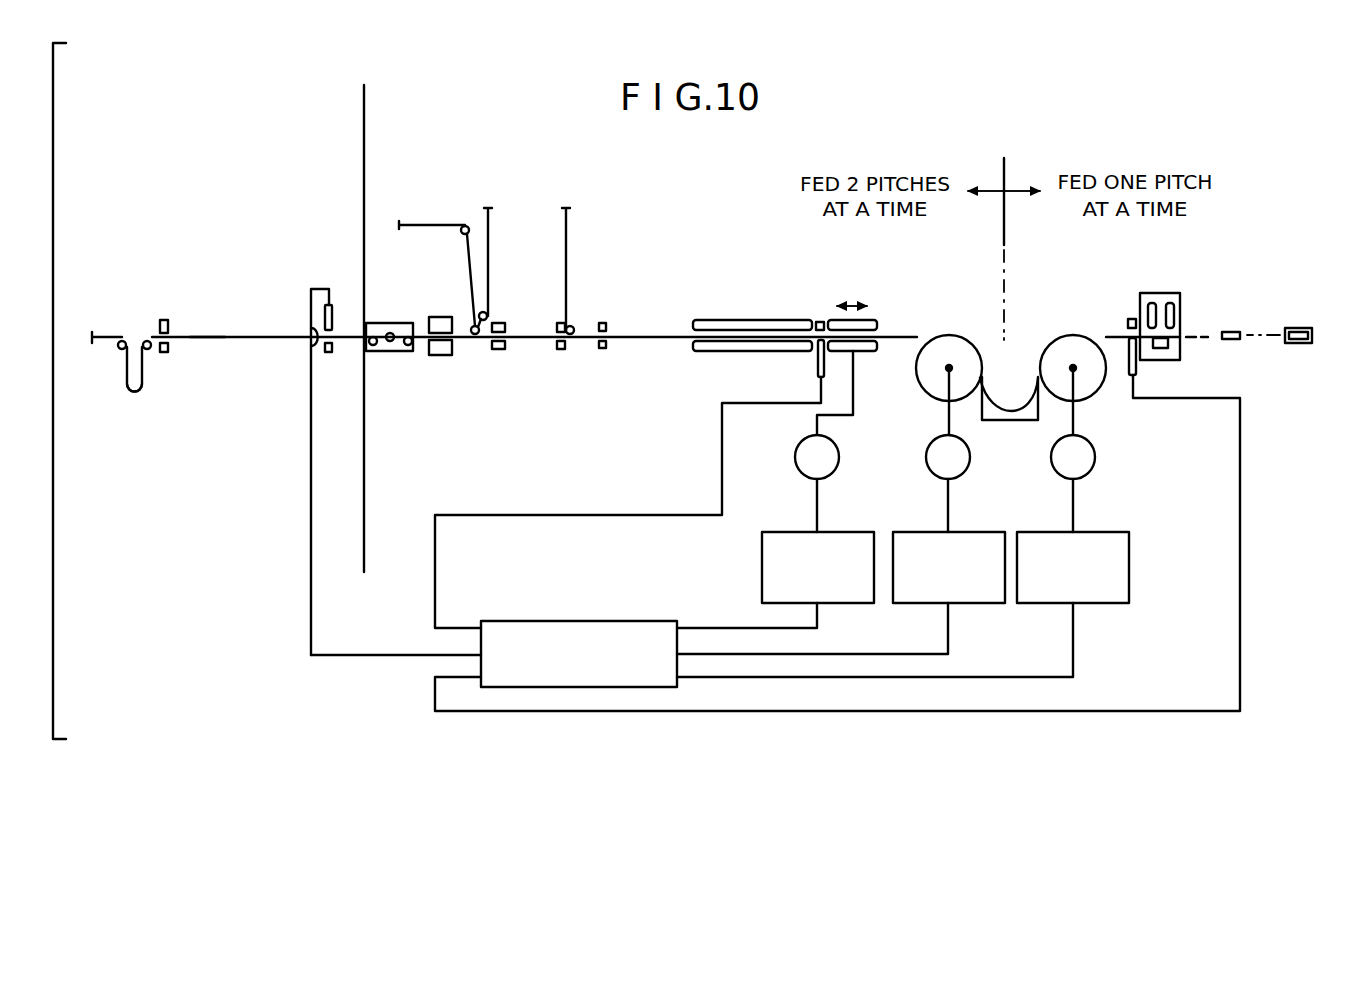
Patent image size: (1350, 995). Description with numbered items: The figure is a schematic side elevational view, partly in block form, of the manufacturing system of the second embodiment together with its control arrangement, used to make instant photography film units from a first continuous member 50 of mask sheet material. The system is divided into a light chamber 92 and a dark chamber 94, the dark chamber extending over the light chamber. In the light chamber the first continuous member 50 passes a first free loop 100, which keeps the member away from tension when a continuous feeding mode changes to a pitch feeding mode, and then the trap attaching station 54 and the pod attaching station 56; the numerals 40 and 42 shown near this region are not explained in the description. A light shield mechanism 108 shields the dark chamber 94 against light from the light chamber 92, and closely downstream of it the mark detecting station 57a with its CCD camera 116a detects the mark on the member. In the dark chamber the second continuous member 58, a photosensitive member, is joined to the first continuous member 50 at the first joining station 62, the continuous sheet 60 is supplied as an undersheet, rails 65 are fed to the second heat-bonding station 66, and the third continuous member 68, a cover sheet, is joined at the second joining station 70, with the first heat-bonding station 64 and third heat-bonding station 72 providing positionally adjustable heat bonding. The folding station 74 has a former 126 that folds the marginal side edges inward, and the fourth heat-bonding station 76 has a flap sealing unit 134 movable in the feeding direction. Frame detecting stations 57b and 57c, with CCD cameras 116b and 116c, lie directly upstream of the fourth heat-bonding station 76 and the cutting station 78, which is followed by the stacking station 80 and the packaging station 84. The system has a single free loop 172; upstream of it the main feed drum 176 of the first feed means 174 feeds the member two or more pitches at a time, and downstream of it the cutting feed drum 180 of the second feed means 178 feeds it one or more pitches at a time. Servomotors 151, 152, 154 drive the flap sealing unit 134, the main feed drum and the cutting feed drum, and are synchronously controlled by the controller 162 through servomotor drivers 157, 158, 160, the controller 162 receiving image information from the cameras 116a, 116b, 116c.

The guide rollers 40 is at (256, 333).
The guide rollers 42 is at (222, 333).
The first continuous member 50 is at (102, 348).
The trap attaching station 54 is at (207, 346).
The pod attaching station 56 is at (262, 346).
The mark detecting station 57a is at (329, 357).
The frame detecting station 57b is at (806, 318).
The frame detecting station 57c is at (1128, 316).
The second continuous member 58 is at (425, 224).
The continuous sheet 60 is at (490, 236).
The first joining station 62 is at (477, 344).
The first heat-bonding station 64 is at (509, 352).
The rails 65 is at (547, 333).
The second heat-bonding station 66 is at (561, 352).
The third continuous member 68 is at (569, 236).
The second joining station 70 is at (576, 326).
The third heat-bonding station 72 is at (609, 353).
The folding station 74 is at (736, 318).
The fourth heat-bonding station 76 is at (822, 318).
The cutting station 78 is at (1190, 309).
The stacking station 80 is at (1246, 324).
The packaging station 84 is at (1302, 322).
The light chamber 92 is at (298, 95).
The dark chamber 94 is at (394, 95).
The first free loop 100 is at (137, 394).
The light shield mechanism 108 is at (394, 320).
The CCD camera 116a is at (331, 303).
The CCD camera 116b is at (818, 362).
The CCD camera 116c is at (1138, 367).
The former 126 is at (750, 353).
The flap sealing unit 134 is at (864, 318).
The servomotor 151 is at (795, 457).
The servomotor 152 is at (926, 458).
The servomotor 154 is at (1095, 458).
The servomotor driver 157 is at (848, 532).
The servomotor driver 158 is at (984, 532).
The servomotor driver 160 is at (1114, 532).
The controller 162 is at (659, 621).
The free loop 172 is at (1010, 420).
The first feed means 174 is at (949, 333).
The main feed drum 176 is at (920, 384).
The second feed means 178 is at (1072, 333).
The cutting feed drum 180 is at (1093, 385).